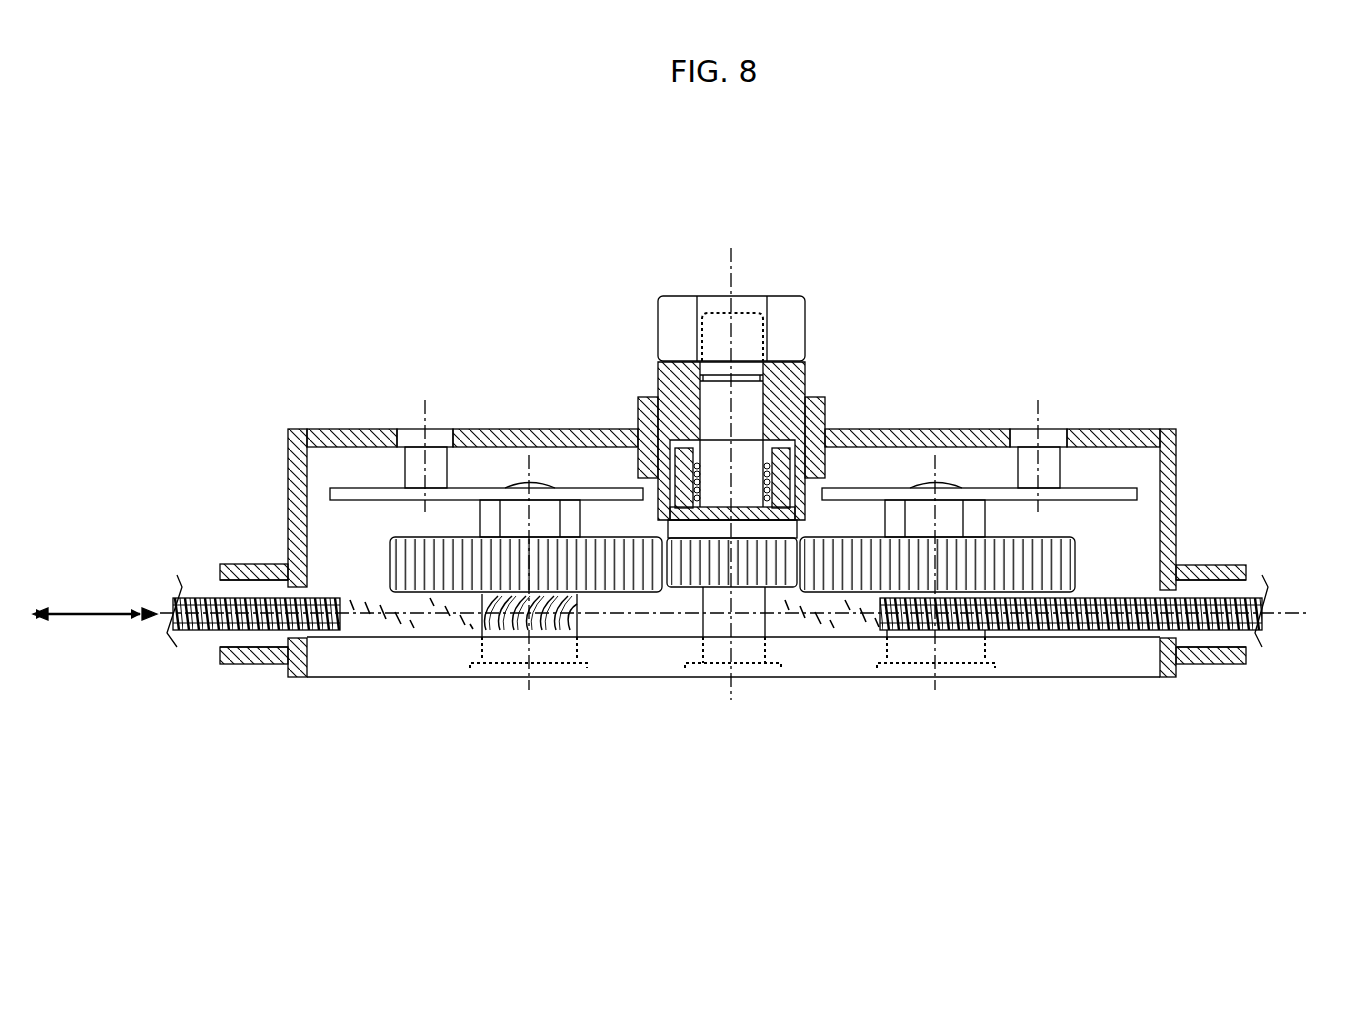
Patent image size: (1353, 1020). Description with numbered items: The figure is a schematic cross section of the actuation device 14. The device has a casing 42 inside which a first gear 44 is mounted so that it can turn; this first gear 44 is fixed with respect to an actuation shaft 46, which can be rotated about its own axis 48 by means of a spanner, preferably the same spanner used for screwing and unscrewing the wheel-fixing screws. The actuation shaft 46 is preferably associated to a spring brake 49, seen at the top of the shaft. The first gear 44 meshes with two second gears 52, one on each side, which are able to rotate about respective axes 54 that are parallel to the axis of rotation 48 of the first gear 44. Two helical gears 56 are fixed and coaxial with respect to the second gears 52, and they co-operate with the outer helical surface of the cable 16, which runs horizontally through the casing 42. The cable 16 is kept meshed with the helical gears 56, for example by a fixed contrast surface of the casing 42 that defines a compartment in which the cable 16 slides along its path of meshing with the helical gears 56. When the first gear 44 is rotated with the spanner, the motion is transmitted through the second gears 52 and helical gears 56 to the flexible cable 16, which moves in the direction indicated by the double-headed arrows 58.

The actuation device 14 is at (1040, 315).
The cable 16 is at (208, 630).
The casing 42 is at (1130, 428).
The first gear 44 is at (745, 570).
The actuation shaft 46 is at (718, 410).
The axis 48 is at (727, 262).
The spring brake 49 is at (770, 458).
The second gears 52 is at (460, 575).
The axes 54 is at (527, 467).
The helical gears 56 is at (578, 622).
The double-headed arrows 58 is at (90, 612).